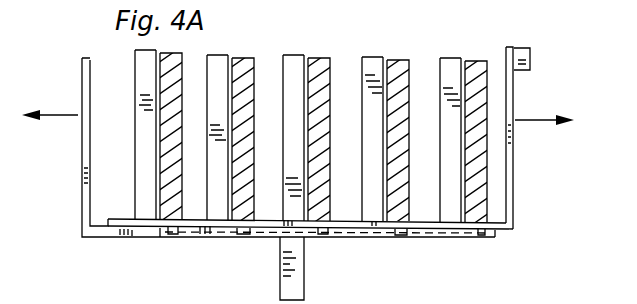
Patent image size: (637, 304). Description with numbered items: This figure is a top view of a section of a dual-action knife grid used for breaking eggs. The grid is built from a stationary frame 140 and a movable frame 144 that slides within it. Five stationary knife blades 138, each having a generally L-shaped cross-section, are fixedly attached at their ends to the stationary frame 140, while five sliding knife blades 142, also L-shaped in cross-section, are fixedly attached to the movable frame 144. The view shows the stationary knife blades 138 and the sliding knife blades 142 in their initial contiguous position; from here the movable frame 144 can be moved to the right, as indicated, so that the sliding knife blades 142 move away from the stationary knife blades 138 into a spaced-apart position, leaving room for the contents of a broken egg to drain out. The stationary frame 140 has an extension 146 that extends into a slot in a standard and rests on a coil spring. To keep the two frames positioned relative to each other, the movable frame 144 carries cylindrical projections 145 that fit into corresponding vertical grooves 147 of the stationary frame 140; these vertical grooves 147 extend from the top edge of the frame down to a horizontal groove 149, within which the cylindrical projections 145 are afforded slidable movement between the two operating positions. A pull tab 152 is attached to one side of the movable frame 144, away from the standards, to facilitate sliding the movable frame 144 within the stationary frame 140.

The stationary knife blades 138 is at (143, 122).
The stationary frame 140 is at (91, 231).
The sliding knife blades 142 is at (170, 78).
The movable frame 144 is at (515, 210).
The cylindrical projections 145 is at (473, 240).
The extensions 146 is at (305, 285).
The vertical grooves 147 is at (483, 238).
The horizontal groove 149 is at (212, 230).
The pull tab 152 is at (532, 62).